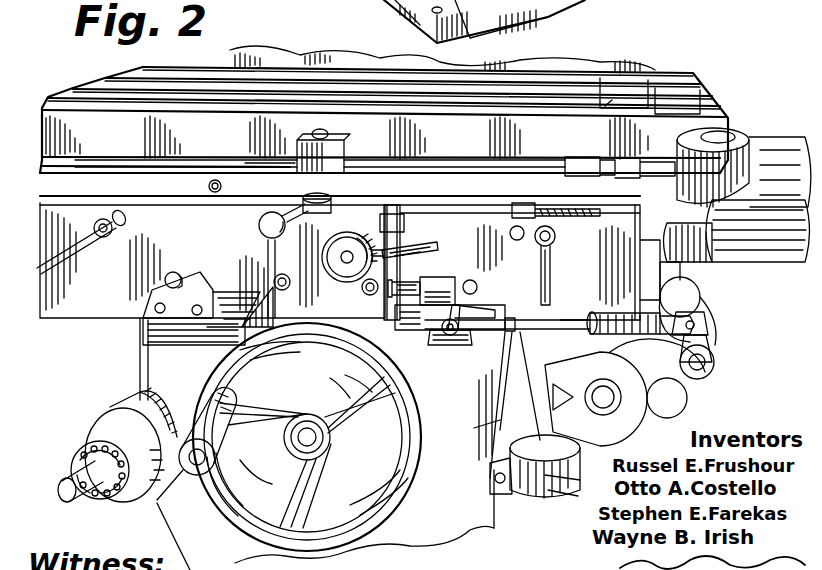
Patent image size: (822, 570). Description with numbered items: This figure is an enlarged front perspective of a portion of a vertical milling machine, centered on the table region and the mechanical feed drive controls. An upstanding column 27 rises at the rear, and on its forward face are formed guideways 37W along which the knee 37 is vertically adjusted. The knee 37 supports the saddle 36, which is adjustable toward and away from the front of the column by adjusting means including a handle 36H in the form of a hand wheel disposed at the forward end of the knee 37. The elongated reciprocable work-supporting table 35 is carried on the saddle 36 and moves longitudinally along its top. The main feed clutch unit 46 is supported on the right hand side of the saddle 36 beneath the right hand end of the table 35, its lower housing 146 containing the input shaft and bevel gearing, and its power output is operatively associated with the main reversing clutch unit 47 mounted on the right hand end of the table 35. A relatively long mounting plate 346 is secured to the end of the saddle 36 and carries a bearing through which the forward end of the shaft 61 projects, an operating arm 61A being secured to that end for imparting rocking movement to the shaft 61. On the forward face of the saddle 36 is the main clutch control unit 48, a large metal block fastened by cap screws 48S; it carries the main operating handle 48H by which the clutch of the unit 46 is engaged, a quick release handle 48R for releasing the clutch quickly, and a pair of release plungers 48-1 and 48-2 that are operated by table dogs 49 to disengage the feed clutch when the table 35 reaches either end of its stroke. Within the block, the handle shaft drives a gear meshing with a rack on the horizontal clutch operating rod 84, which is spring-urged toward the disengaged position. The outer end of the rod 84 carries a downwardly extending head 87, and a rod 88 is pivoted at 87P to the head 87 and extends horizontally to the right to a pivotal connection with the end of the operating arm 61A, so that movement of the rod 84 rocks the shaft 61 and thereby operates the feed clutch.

The column 27 is at (306, 60).
The work-supporting table 35 is at (527, 72).
The release plunger 48-1 is at (375, 164).
The release plunger 48-2 is at (398, 206).
The table dog 49 is at (522, 214).
The main operating handle 48H is at (259, 226).
The main clutch control unit 48 is at (291, 252).
The guideways 37W is at (227, 305).
The quick release handle 48R is at (416, 252).
The cap screws 48S is at (362, 294).
The clutch operating rod 84 is at (412, 284).
The head 87 is at (452, 308).
The pivot 87P is at (450, 337).
The rod 88 is at (548, 318).
The mounting plate 346 is at (642, 286).
The lower housing 146 is at (710, 322).
The main reversing clutch unit 47 is at (773, 232).
The main feed clutch unit 46 is at (726, 329).
The operating arm 61A is at (703, 342).
The shaft 61 is at (707, 377).
The saddle 36 is at (100, 298).
The handle 36H is at (410, 478).
The knee 37 is at (192, 517).